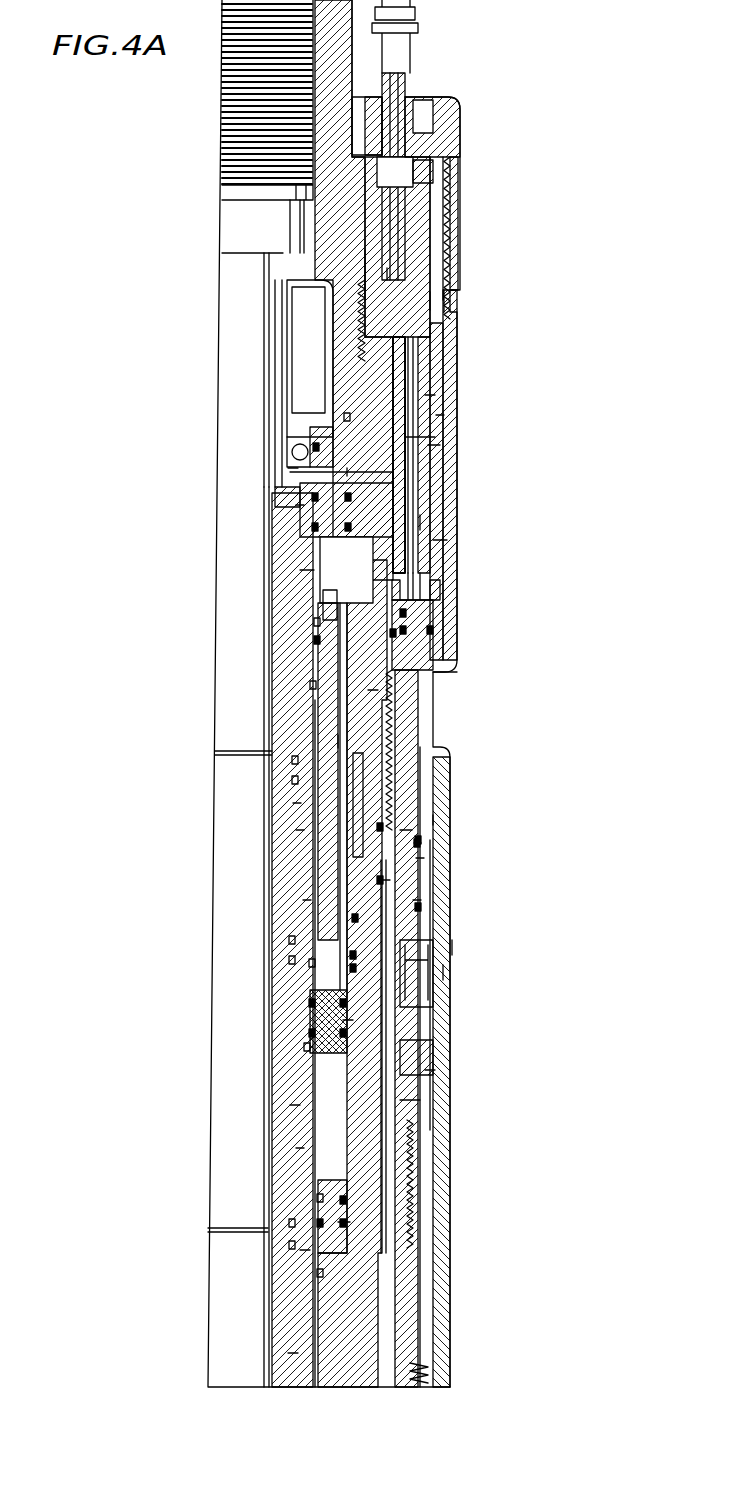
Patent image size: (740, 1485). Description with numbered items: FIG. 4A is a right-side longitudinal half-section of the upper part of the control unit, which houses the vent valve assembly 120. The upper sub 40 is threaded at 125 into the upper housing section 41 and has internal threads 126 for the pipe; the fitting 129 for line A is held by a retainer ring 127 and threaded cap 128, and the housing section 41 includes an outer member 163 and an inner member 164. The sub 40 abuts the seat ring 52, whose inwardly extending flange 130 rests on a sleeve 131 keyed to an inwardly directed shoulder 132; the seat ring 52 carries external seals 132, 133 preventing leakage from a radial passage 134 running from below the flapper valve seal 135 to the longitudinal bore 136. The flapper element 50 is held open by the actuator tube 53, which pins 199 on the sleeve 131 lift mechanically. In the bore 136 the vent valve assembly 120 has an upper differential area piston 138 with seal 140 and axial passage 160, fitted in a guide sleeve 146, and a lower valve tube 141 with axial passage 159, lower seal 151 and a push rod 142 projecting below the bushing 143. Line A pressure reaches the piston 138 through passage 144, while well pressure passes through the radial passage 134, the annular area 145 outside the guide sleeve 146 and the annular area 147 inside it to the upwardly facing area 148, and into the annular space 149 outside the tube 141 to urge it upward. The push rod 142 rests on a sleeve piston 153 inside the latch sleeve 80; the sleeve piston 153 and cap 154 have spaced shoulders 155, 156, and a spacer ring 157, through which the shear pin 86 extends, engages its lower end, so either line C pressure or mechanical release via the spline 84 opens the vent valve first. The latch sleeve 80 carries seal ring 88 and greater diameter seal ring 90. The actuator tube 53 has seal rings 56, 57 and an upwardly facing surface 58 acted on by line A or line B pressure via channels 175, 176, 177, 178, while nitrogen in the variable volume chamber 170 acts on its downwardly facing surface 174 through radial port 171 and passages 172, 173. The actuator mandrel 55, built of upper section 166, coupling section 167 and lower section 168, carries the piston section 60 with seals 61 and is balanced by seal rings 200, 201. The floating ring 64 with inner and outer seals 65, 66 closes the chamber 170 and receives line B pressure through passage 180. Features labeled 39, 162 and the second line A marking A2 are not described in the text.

The shoulder 39 is at (430, 300).
The upper sub 40 is at (330, 97).
The upper housing section 41 is at (385, 328).
The flapper element 50 is at (307, 330).
The seat ring 52 is at (343, 445).
The actuator tube 53 is at (280, 703).
The main valve actuator mandrel 55 is at (322, 925).
The seal rings 56 is at (293, 780).
The seal rings 57 is at (293, 987).
The upwardly facing surface 58 is at (292, 940).
The piston section 60 is at (348, 1020).
The seals 61 is at (347, 998).
The floating ring 64 is at (333, 1210).
The inner seal ring 65 is at (300, 1218).
The outer seal ring 66 is at (343, 1225).
The latch sleeve 80 is at (447, 972).
The spline connection 84 is at (427, 1300).
The shear pin 86 is at (430, 1070).
The seal ring 88 is at (420, 862).
The greater diameter seal ring 90 is at (417, 903).
The vent valve assembly 120 is at (497, 577).
The threads 125 is at (365, 260).
The internal threads 126 is at (322, 67).
The retainer ring 127 is at (433, 142).
The threaded cap 128 is at (452, 190).
The fitting 129 is at (407, 87).
The inwardly extending flange 130 is at (345, 478).
The sleeve 131 is at (307, 575).
The inwardly directed shoulder 132 is at (347, 417).
The lower external seal 133 is at (378, 527).
The radial passage 134 is at (377, 482).
The flapper valve seal 135 is at (293, 472).
The longitudinal bore 136 is at (440, 420).
The upper differential area piston 138 is at (430, 400).
The seal 140 is at (432, 449).
The lower valve tube 141 is at (433, 627).
The push rod 142 is at (433, 712).
The bushing 143 is at (440, 670).
The passage 144 is at (418, 207).
The annular area 145 is at (393, 360).
The guide sleeve 146 is at (400, 358).
The annular area 147 is at (443, 385).
The upwardly facing area 148 is at (425, 436).
The annular space 149 is at (440, 543).
The lower seal 151 is at (432, 600).
The sleeve piston 153 is at (382, 880).
The cap 154 is at (440, 757).
The shoulder 155 is at (440, 820).
The shoulder 156 is at (405, 835).
The spacer ring 157 is at (417, 1047).
The axial passage 159 is at (427, 523).
The axial passage 160 is at (427, 352).
The mandrel bore 162 is at (373, 692).
The outer member 163 is at (417, 847).
The inner member 164 is at (357, 1098).
The upper section 166 is at (307, 730).
The coupling section 167 is at (305, 1250).
The lower section 168 is at (293, 1353).
The variable volume chamber 170 is at (330, 1155).
The radial port 171 is at (295, 1105).
The passage 172 is at (310, 1200).
The passage 173 is at (300, 1150).
The downwardly facing surface 174 is at (320, 1010).
The channel 175 is at (318, 965).
The channel 176 is at (307, 903).
The channel 177 is at (297, 807).
The channel 178 is at (300, 833).
The passage 180 is at (372, 1122).
The pins 199 is at (300, 502).
The seal ring 200 is at (320, 1273).
The seal ring 201 is at (313, 683).
The line A is at (387, 273).
The section A lower A2 is at (455, 948).
The line B is at (342, 741).
The line C is at (355, 845).